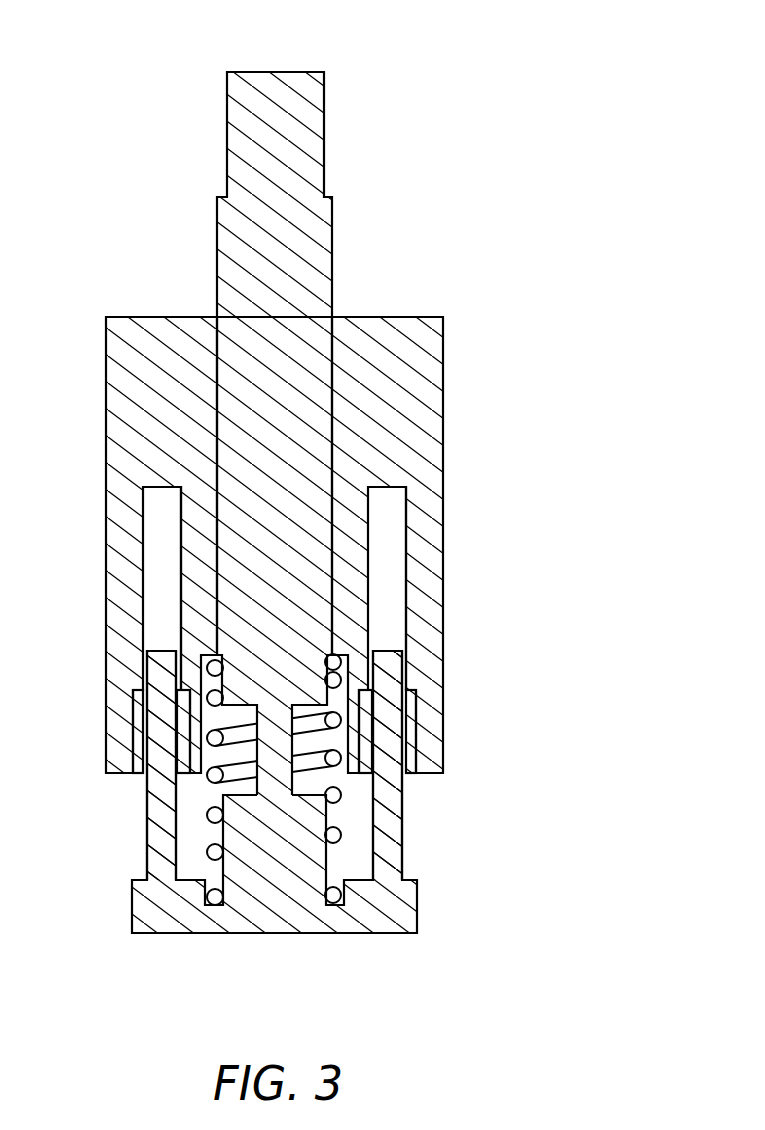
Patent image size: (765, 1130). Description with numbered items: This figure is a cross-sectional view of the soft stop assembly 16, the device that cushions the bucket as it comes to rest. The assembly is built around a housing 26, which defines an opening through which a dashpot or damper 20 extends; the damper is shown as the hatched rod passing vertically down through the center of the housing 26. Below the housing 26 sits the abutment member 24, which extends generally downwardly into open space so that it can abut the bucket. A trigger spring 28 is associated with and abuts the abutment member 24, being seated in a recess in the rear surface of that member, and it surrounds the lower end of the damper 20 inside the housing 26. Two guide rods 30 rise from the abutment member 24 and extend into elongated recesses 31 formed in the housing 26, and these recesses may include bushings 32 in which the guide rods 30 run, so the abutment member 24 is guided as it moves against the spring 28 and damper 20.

The soft stop assembly 16 is at (544, 158).
The dashpot or damper 20 is at (235, 223).
The abutment member 24 is at (393, 907).
The housing 26 is at (426, 340).
The trigger spring 28 is at (341, 795).
The guide rods 30 is at (160, 672).
The elongated recesses 31 is at (160, 526).
The bushings 32 is at (137, 717).